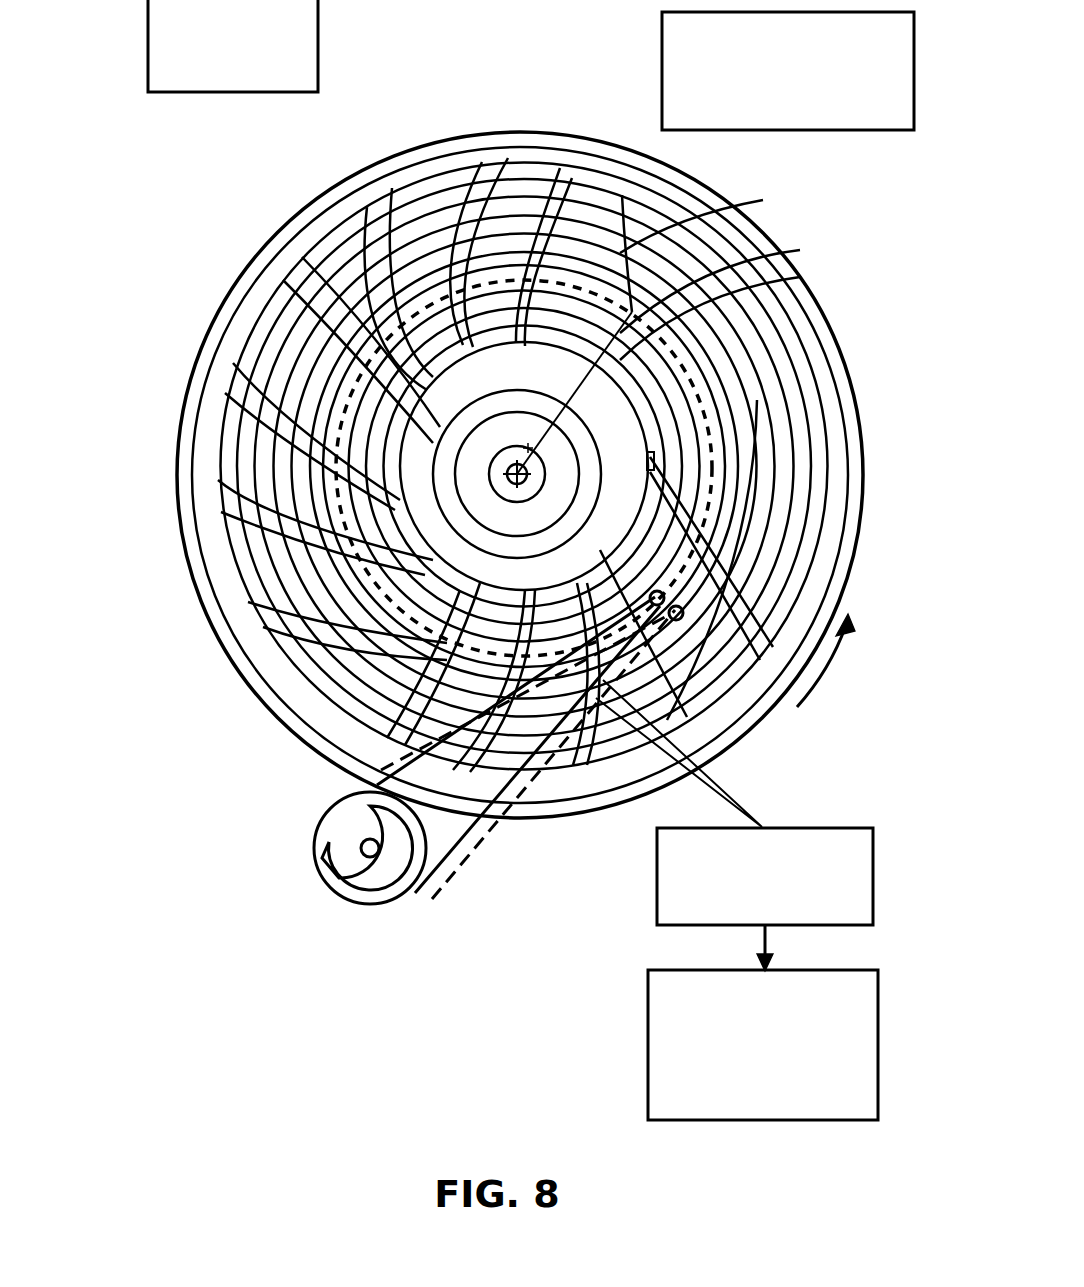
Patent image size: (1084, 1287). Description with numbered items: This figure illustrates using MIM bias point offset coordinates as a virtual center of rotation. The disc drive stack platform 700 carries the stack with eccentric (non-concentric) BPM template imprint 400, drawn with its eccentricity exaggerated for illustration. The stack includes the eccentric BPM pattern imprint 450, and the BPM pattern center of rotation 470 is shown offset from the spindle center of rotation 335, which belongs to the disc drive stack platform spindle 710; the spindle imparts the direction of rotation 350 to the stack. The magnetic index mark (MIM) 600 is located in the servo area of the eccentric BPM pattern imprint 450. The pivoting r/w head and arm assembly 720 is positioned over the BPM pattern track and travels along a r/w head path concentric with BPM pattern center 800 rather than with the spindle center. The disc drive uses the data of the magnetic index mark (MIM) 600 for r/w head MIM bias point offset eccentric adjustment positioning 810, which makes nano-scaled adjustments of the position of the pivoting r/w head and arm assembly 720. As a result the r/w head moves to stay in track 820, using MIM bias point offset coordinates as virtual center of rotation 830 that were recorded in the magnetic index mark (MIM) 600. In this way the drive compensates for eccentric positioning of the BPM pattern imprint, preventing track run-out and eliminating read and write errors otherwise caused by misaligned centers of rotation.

The spindle center of rotation 335 is at (517, 474).
The direction of rotation 350 is at (832, 664).
The stack with eccentric (non-concentric) BPM template imprint 400 is at (218, 338).
The eccentric BPM pattern imprint 450 is at (530, 153).
The BPM pattern center of rotation 470 is at (735, 277).
The magnetic index mark (MIM) 600 is at (652, 456).
The disc drive stack platform 700 is at (148, 36).
The disc drive stack platform spindle 710 is at (460, 505).
The pivoting r/w head and arm assembly 720 is at (358, 905).
The r/w head path concentric with BPM pattern center 800 is at (682, 132).
The r/w head MIM bias point offset eccentric adjustment positioning 810 is at (538, 763).
The r/w head moves to stay in track 820 is at (660, 916).
The using MIM bias point offset coordinates as virtual center of rotation 830 is at (652, 1022).